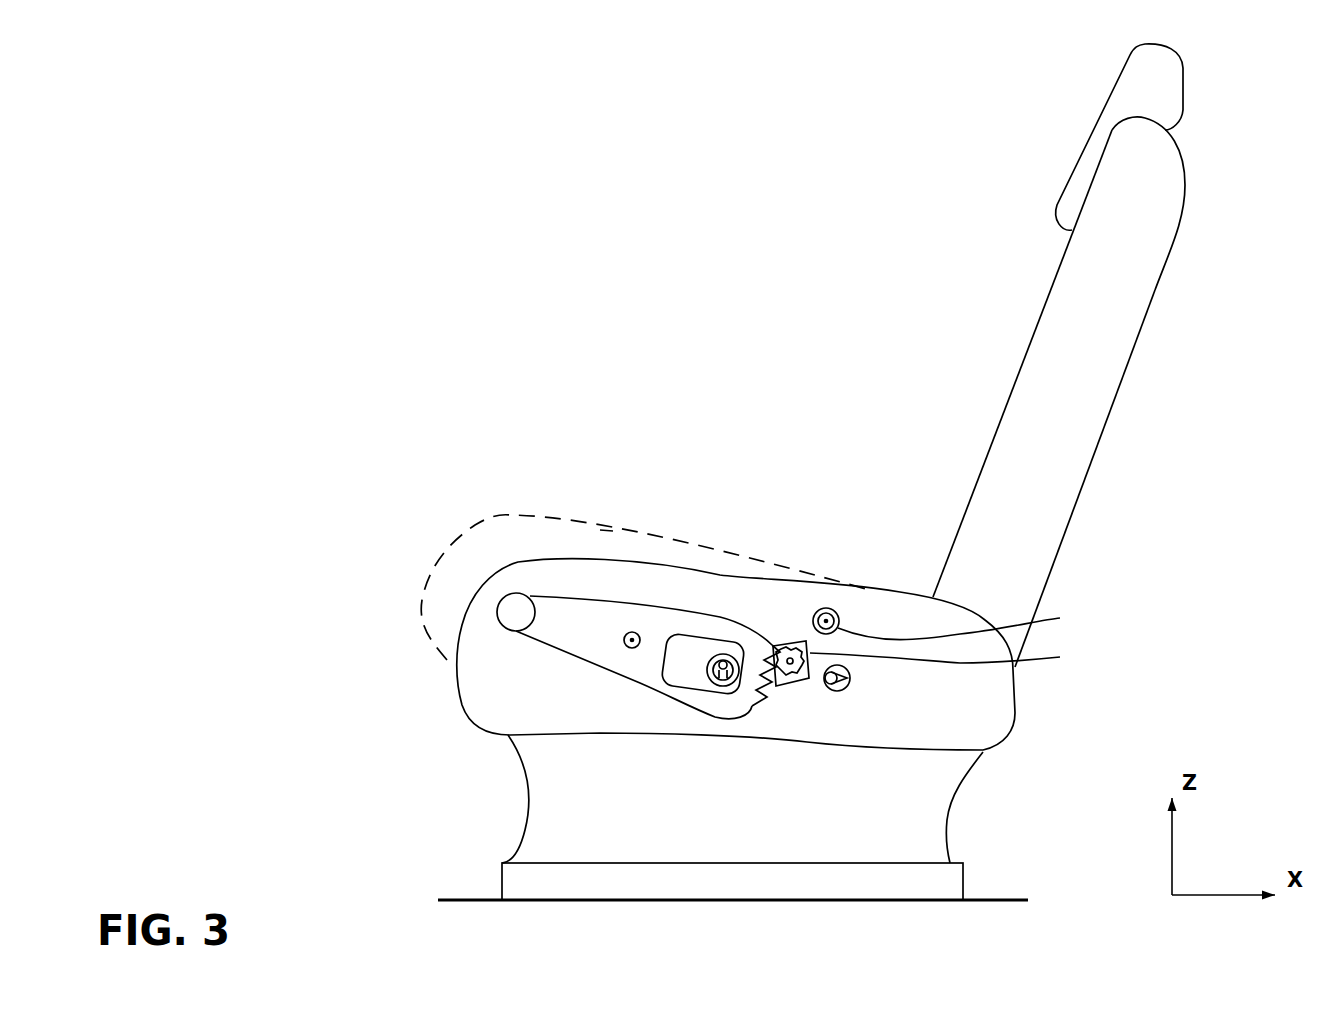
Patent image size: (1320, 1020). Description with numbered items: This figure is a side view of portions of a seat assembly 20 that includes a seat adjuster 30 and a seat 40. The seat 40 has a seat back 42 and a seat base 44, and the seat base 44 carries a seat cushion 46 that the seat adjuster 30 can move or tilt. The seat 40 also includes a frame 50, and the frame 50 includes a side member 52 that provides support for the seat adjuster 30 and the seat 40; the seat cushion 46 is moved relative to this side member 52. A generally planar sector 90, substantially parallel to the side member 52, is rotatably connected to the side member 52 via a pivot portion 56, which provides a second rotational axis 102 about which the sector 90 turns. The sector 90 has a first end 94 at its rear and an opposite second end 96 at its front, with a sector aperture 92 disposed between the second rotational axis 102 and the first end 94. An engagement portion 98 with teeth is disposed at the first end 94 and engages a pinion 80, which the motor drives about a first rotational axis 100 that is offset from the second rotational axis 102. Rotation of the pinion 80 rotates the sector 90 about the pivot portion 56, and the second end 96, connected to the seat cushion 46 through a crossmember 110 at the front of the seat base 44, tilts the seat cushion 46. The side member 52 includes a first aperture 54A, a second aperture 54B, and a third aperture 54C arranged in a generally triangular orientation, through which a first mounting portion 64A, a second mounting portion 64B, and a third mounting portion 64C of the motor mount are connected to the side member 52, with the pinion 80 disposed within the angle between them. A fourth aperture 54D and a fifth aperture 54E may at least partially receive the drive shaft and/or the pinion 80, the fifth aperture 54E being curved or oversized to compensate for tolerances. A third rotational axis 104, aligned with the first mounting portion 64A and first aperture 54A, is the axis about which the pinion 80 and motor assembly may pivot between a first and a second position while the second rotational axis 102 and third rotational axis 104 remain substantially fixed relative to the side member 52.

The seat assembly 20 is at (699, 228).
The seat adjuster 30 is at (432, 650).
The seat 40 is at (1125, 551).
The seat back 42 is at (1112, 408).
The seat base 44 is at (484, 514).
The seat cushion 46 is at (606, 528).
The frame 50 is at (928, 803).
The side member 52 is at (1005, 685).
The first aperture 54A is at (829, 617).
The second aperture 54B is at (843, 692).
The third aperture 54C is at (727, 655).
The fourth aperture 54D is at (633, 638).
The fifth aperture 54E is at (1060, 657).
The pivot portion 56 is at (626, 634).
The first mounting portion 64A is at (882, 544).
The second mounting portion 64B is at (967, 810).
The third mounting portion 64C is at (717, 711).
The pinion 80 is at (823, 694).
The sector 90 is at (666, 681).
The sector aperture 92 is at (684, 663).
The first end 94 is at (752, 733).
The second end 96 is at (488, 628).
The engagement portion 98 is at (778, 693).
The first rotational axis 100 is at (803, 678).
The second rotational axis 102 is at (632, 648).
The third rotational axis 104 is at (1060, 618).
The crossmember 110 is at (510, 598).